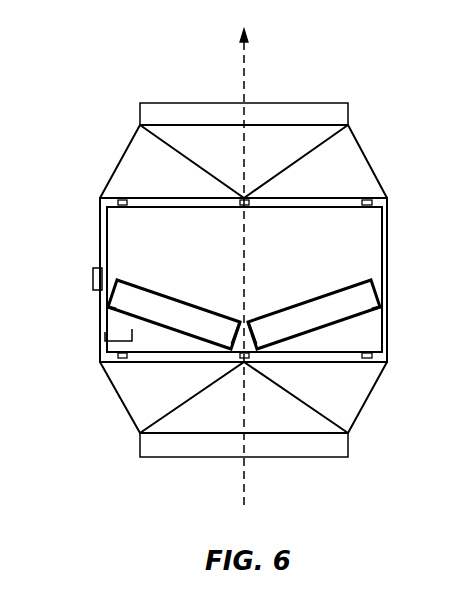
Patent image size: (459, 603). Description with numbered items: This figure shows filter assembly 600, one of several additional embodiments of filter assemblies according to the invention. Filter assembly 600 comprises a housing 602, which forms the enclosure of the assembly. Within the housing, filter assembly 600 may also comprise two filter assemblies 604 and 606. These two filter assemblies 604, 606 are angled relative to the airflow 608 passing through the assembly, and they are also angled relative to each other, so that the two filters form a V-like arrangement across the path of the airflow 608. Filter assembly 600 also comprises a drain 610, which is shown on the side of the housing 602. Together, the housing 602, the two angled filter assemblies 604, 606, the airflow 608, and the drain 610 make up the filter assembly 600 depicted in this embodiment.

The filter assembly 600 is at (143, 57).
The housing 602 is at (121, 161).
The filter assembly 604 is at (192, 322).
The filter assembly 606 is at (297, 322).
The airflow 608 is at (242, 487).
The drain 610 is at (93, 277).